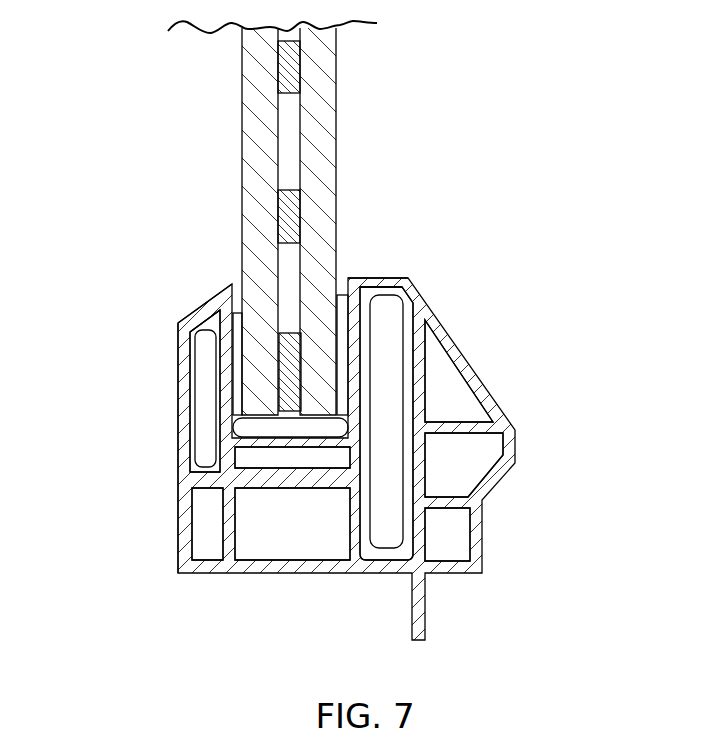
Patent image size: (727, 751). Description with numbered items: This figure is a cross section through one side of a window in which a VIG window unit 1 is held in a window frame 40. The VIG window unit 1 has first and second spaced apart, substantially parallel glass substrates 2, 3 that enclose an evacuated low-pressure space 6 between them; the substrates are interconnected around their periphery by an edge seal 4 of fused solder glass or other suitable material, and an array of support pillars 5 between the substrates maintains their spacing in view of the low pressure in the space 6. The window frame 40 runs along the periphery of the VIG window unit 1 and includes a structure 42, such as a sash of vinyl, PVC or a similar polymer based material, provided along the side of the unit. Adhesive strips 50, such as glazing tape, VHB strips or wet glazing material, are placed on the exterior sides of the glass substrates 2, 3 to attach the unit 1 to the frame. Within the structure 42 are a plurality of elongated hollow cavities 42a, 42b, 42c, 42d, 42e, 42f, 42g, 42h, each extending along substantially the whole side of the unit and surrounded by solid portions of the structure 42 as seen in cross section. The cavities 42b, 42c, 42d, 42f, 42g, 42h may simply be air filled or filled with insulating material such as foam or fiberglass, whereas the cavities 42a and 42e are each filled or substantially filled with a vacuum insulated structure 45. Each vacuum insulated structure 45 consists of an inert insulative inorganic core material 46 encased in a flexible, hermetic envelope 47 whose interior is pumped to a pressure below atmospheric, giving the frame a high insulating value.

The VIG window unit 1 is at (192, 116).
The first glass substrate 2 is at (260, 162).
The second glass substrate 3 is at (322, 165).
The peripheral edge seal 4 is at (287, 330).
The support pillars/spacers 5 is at (300, 78).
The low-pressure space/cavity 6 is at (292, 130).
The window frame 40 is at (335, 448).
The structure 42 is at (445, 322).
The elongated hollow cavity 42a is at (185, 345).
The elongated hollow cavity 42b is at (205, 545).
The elongated hollow cavity 42c is at (267, 462).
The elongated hollow cavity 42d is at (308, 540).
The elongated hollow cavity 42e is at (410, 291).
The elongated hollow cavity 42f is at (455, 398).
The elongated hollow cavity 42g is at (480, 453).
The elongated hollow cavity 42h is at (452, 547).
The vacuum insulated structure 45 is at (208, 410).
The insulative inorganic core material 46 is at (205, 453).
The envelope 47 is at (190, 370).
The adhesive strips 50 is at (238, 284).